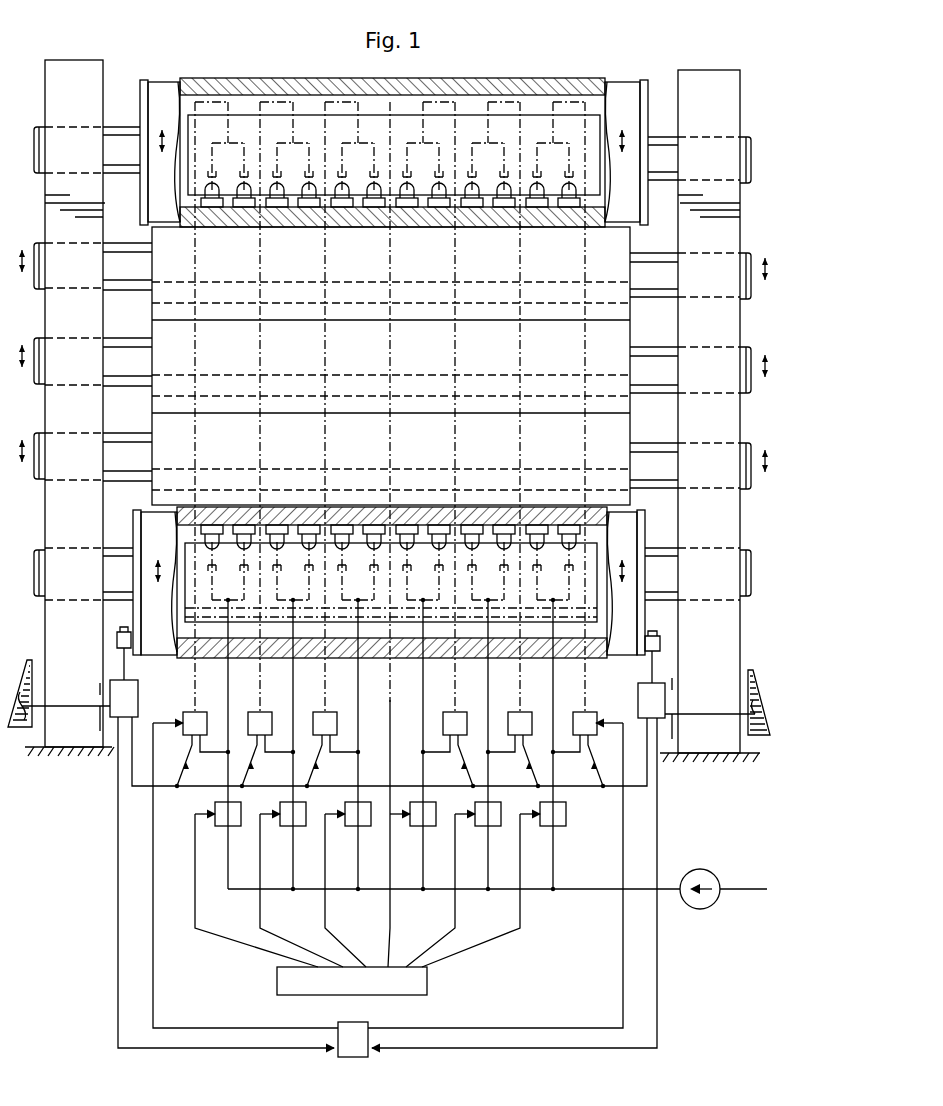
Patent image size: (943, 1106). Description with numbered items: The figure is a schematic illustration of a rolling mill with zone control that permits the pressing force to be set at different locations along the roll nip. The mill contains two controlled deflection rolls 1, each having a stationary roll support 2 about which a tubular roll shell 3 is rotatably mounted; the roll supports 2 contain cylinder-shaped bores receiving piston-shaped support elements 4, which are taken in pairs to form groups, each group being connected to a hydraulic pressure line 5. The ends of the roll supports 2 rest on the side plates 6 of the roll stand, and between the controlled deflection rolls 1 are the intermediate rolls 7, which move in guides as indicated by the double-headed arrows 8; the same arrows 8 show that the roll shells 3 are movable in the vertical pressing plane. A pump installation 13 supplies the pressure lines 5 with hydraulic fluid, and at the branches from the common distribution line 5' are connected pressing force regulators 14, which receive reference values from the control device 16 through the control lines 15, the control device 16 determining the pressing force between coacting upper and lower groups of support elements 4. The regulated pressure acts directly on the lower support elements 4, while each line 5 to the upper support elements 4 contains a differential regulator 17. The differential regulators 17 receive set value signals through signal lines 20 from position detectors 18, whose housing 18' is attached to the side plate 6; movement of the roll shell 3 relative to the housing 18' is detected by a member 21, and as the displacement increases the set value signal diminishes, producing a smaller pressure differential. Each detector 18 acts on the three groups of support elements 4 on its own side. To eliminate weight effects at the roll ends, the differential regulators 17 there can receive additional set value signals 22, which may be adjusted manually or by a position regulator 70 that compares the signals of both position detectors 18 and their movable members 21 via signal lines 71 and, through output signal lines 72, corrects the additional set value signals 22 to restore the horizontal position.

The controlled deflection roll 1 is at (288, 75).
The roll support 2 is at (476, 113).
The roll shell 3 is at (539, 85).
The support element 4 is at (366, 213).
The hydraulic pressure line 5 is at (390, 515).
The common distribution line 5' is at (497, 906).
The side plate 6 is at (98, 74).
The intermediate roll 7 is at (624, 313).
The double-headed arrow 8 is at (22, 442).
The pump installation 13 is at (710, 906).
The pressing force regulator 14 is at (566, 815).
The control line 15 is at (486, 935).
The control device 16 is at (416, 983).
The differential regulator 17 is at (200, 712).
The position detector 18 is at (387, 687).
The housing of the position detector 18' is at (389, 698).
The signal line 20 is at (132, 786).
The member 21 is at (122, 648).
The additional set value signal 22 is at (172, 722).
The position regulator 70 is at (360, 1057).
The signal line 71 is at (118, 826).
The output signal line 72 is at (153, 973).